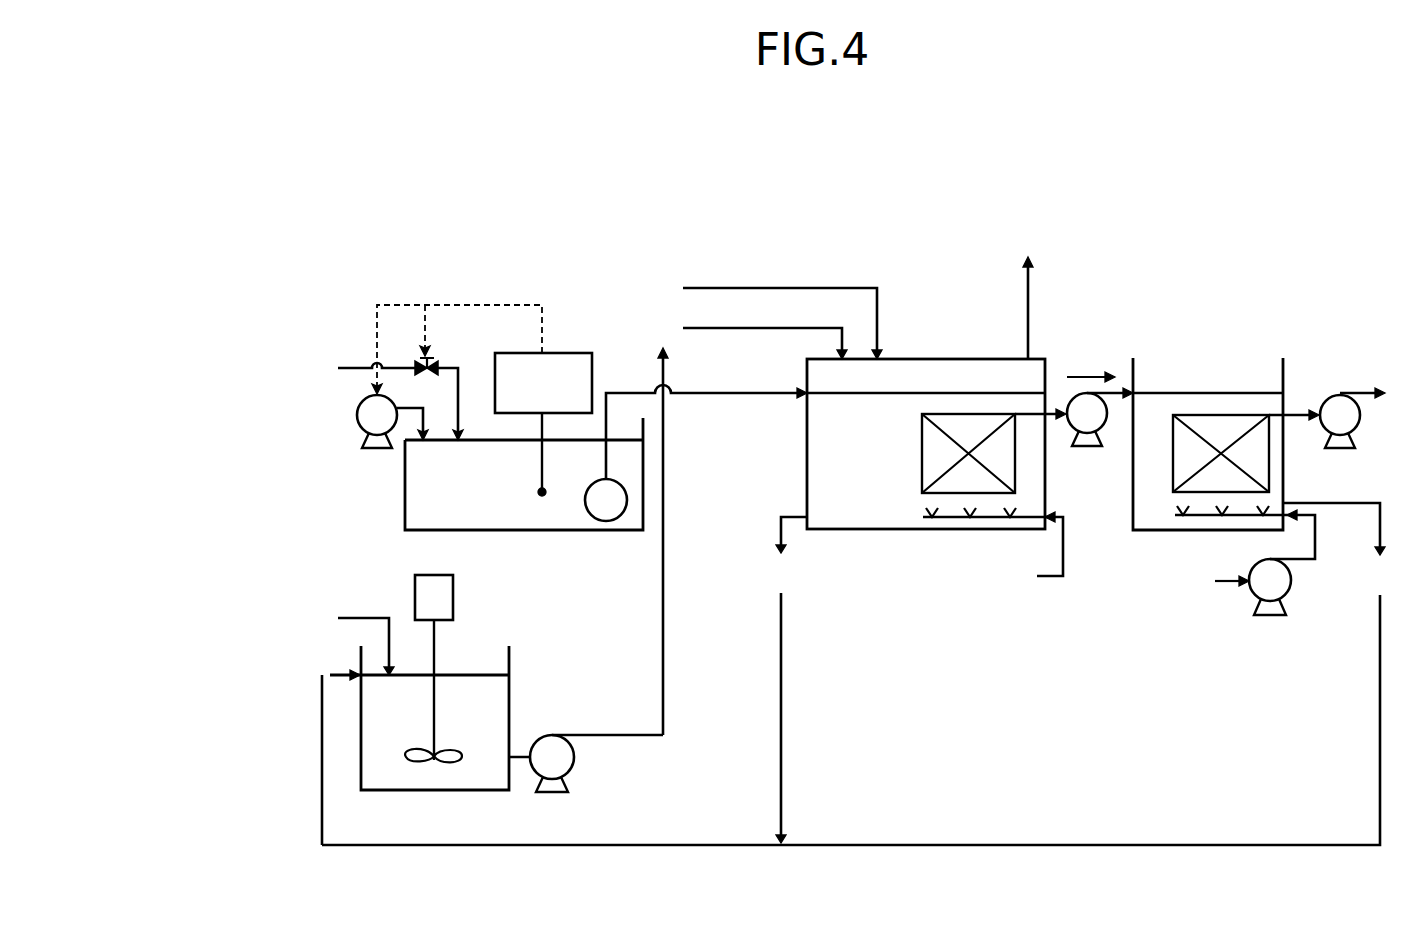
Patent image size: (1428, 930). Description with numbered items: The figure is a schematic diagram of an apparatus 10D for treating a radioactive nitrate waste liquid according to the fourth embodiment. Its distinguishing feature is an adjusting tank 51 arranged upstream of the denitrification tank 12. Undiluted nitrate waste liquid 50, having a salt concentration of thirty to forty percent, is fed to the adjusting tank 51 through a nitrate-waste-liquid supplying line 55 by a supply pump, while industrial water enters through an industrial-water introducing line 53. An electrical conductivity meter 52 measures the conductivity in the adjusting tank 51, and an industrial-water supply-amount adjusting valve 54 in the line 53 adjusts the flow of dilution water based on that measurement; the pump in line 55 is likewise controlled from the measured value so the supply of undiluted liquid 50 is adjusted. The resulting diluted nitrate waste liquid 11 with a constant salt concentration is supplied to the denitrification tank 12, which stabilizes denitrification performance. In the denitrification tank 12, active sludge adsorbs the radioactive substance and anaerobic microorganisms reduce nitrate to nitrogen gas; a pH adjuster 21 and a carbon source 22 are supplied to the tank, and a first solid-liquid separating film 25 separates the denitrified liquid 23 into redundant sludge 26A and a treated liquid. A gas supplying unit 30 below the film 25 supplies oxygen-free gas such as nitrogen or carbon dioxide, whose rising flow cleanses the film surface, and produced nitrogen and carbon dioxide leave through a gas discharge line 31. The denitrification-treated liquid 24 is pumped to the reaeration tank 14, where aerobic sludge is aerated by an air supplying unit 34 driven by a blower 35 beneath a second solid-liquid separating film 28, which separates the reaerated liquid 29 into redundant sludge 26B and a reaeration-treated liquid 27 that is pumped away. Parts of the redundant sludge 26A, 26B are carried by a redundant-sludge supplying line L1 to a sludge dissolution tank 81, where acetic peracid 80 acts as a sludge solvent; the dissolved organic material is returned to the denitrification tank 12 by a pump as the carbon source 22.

The apparatus for treating a radioactive nitrate waste liquid 10D is at (767, 223).
The nitrate waste liquid 11 is at (750, 401).
The denitrification tank 12 is at (893, 634).
The reaeration tank 14 is at (1187, 634).
The pH adjuster 21 is at (766, 317).
The carbon source 22 is at (748, 337).
The denitrified liquid 23 is at (905, 408).
The denitrification-treated liquid 24 is at (1080, 370).
The first solid-liquid separating film 25 is at (962, 413).
The redundant sludge 26A is at (784, 680).
The redundant sludge 26B is at (862, 674).
The reaeration-treated liquid 27 is at (1345, 415).
The second solid-liquid separating film 28 is at (1220, 412).
The reaerated liquid 29 is at (1153, 408).
The gas supplying unit 30 is at (925, 513).
The gas discharge line 31 is at (1027, 287).
The air supplying unit 34 is at (1260, 513).
The blower 35 is at (1292, 587).
The nitrate waste liquid 50 is at (357, 408).
The adjusting tank 51 is at (495, 288).
The electrical conductivity meter 52 is at (560, 353).
The industrial-water introducing line 53 is at (355, 367).
The industrial-water supply-amount adjusting valve 54 is at (437, 368).
The nitrate-waste-liquid supplying line 55 is at (354, 419).
The acetic peracid 80 is at (348, 634).
The sludge dissolution tank 81 is at (428, 810).
The redundant-sludge supplying line L1 is at (321, 803).